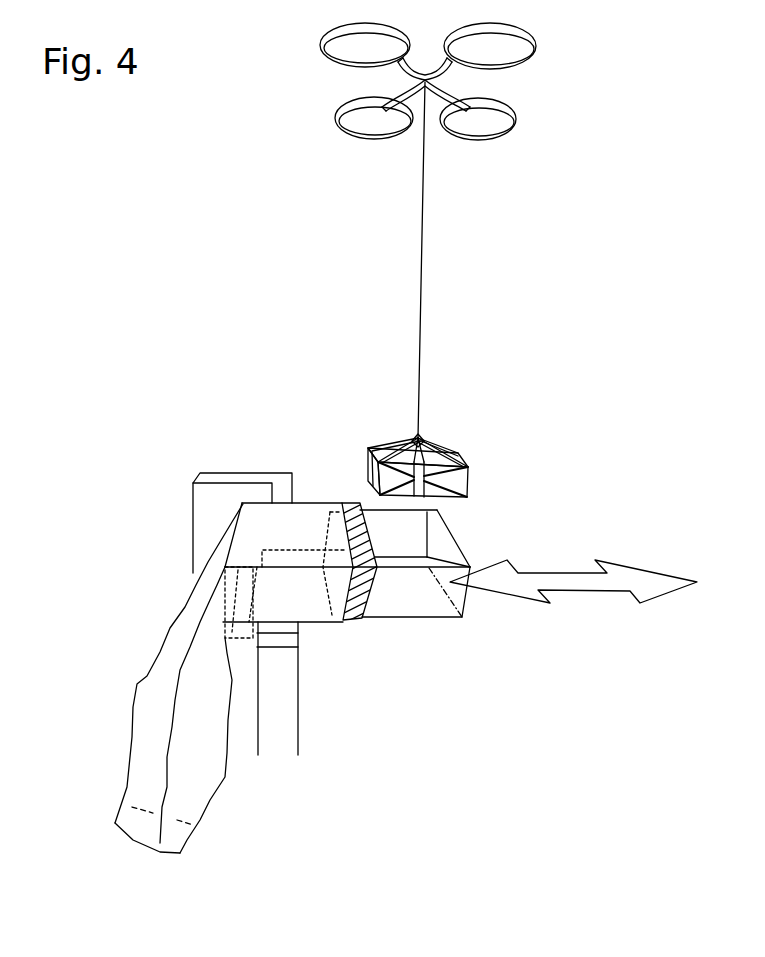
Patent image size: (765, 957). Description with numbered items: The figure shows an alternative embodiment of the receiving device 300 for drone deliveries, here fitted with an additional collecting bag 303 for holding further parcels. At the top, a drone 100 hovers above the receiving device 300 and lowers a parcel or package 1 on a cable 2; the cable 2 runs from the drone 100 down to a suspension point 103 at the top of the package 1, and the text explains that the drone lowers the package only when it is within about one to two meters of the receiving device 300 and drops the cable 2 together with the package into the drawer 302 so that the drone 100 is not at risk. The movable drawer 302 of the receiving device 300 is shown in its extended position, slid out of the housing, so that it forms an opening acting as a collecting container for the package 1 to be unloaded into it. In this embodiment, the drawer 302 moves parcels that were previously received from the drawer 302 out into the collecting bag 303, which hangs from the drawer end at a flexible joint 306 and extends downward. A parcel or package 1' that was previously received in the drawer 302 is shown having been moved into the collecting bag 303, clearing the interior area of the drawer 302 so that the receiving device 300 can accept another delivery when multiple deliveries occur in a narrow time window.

The drone 100 is at (517, 33).
The cable 2 is at (422, 275).
The attachment point / hook 103 is at (422, 437).
The parcel or package 1 is at (464, 467).
The receiving device 300 is at (406, 610).
The drawer 302 is at (402, 607).
The flexible collar / joint 306 is at (347, 620).
The collecting bag 303 is at (200, 785).
The parcel or package 1' is at (199, 830).